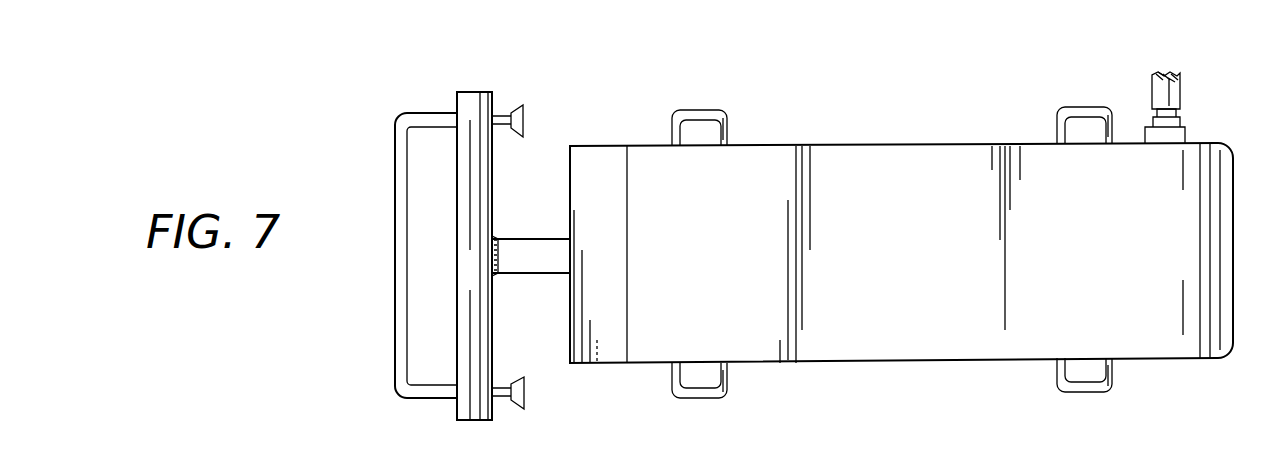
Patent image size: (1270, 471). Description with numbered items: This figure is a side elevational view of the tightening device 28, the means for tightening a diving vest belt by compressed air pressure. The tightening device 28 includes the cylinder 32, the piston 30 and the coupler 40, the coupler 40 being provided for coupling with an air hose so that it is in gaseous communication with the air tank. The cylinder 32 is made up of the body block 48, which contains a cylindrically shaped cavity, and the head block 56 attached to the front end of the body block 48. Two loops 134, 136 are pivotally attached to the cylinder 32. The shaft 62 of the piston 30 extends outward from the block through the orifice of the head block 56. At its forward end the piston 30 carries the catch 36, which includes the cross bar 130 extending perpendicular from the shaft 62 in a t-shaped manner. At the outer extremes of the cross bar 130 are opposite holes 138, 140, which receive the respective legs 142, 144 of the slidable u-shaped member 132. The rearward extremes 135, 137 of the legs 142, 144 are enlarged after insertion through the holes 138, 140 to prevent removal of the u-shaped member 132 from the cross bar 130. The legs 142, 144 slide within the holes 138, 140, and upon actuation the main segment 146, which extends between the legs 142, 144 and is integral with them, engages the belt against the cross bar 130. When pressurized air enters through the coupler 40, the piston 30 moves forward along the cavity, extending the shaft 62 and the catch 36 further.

The tightening device 28 is at (911, 227).
The piston 30 is at (531, 223).
The cylinder 32 is at (901, 225).
The catch 36 is at (455, 246).
The coupler 40 is at (1181, 100).
The body block 48 is at (958, 265).
The head block 56 is at (615, 197).
The throat (shaft) 62 is at (547, 268).
The cross bar 130 is at (482, 310).
The u-shaped member 132 is at (395, 165).
The loop 134 is at (1110, 107).
The rearward extreme of leg 135 is at (525, 118).
The loop 136 is at (729, 112).
The rearward extreme of leg 137 is at (526, 393).
The hole 138 is at (455, 106).
The hole 140 is at (455, 398).
The leg 142 is at (512, 110).
The leg 144 is at (509, 384).
The main segment 146 is at (395, 352).